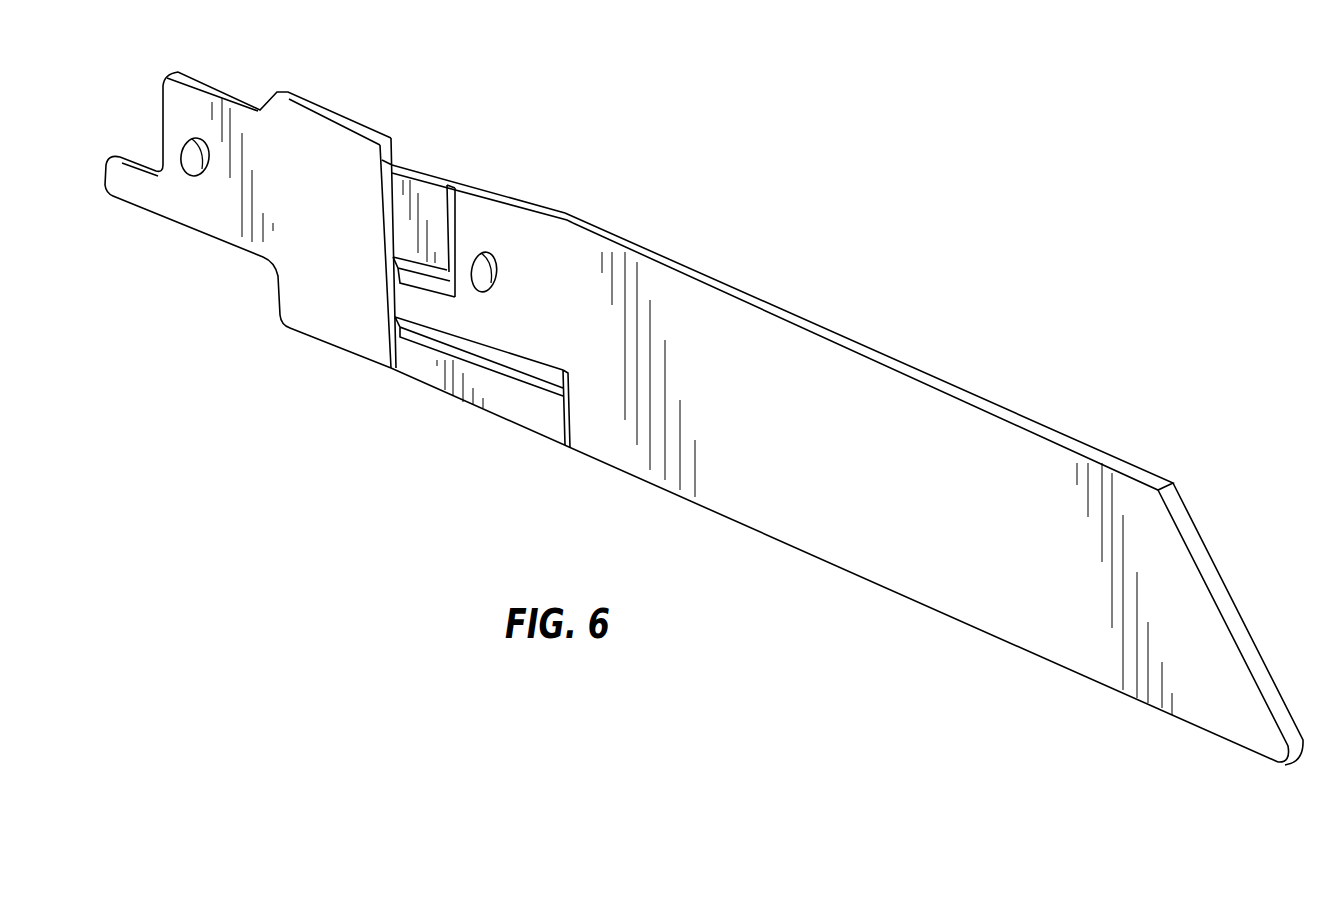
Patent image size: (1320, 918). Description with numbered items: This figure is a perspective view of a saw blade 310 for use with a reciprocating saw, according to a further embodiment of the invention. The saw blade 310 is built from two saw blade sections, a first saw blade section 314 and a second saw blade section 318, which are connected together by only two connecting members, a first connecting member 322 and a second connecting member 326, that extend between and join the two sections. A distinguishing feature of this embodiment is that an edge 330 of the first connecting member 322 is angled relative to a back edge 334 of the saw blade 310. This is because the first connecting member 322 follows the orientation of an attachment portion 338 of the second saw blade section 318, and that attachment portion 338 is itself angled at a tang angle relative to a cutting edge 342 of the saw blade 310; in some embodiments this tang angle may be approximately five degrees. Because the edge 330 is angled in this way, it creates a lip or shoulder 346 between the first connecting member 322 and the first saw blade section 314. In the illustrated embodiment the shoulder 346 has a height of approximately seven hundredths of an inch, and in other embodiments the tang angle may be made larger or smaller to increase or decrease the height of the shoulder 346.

The saw blade 310 is at (757, 164).
The first saw blade section 314 is at (322, 150).
The second saw blade section 318 is at (910, 413).
The first connecting member 322 is at (433, 212).
The second connecting member 326 is at (517, 403).
The edge of the first connecting member 330 is at (425, 172).
The back edge 334 is at (750, 300).
The attachment portion 338 is at (530, 250).
The cutting edge 342 is at (785, 544).
The shoulder 346 is at (392, 153).